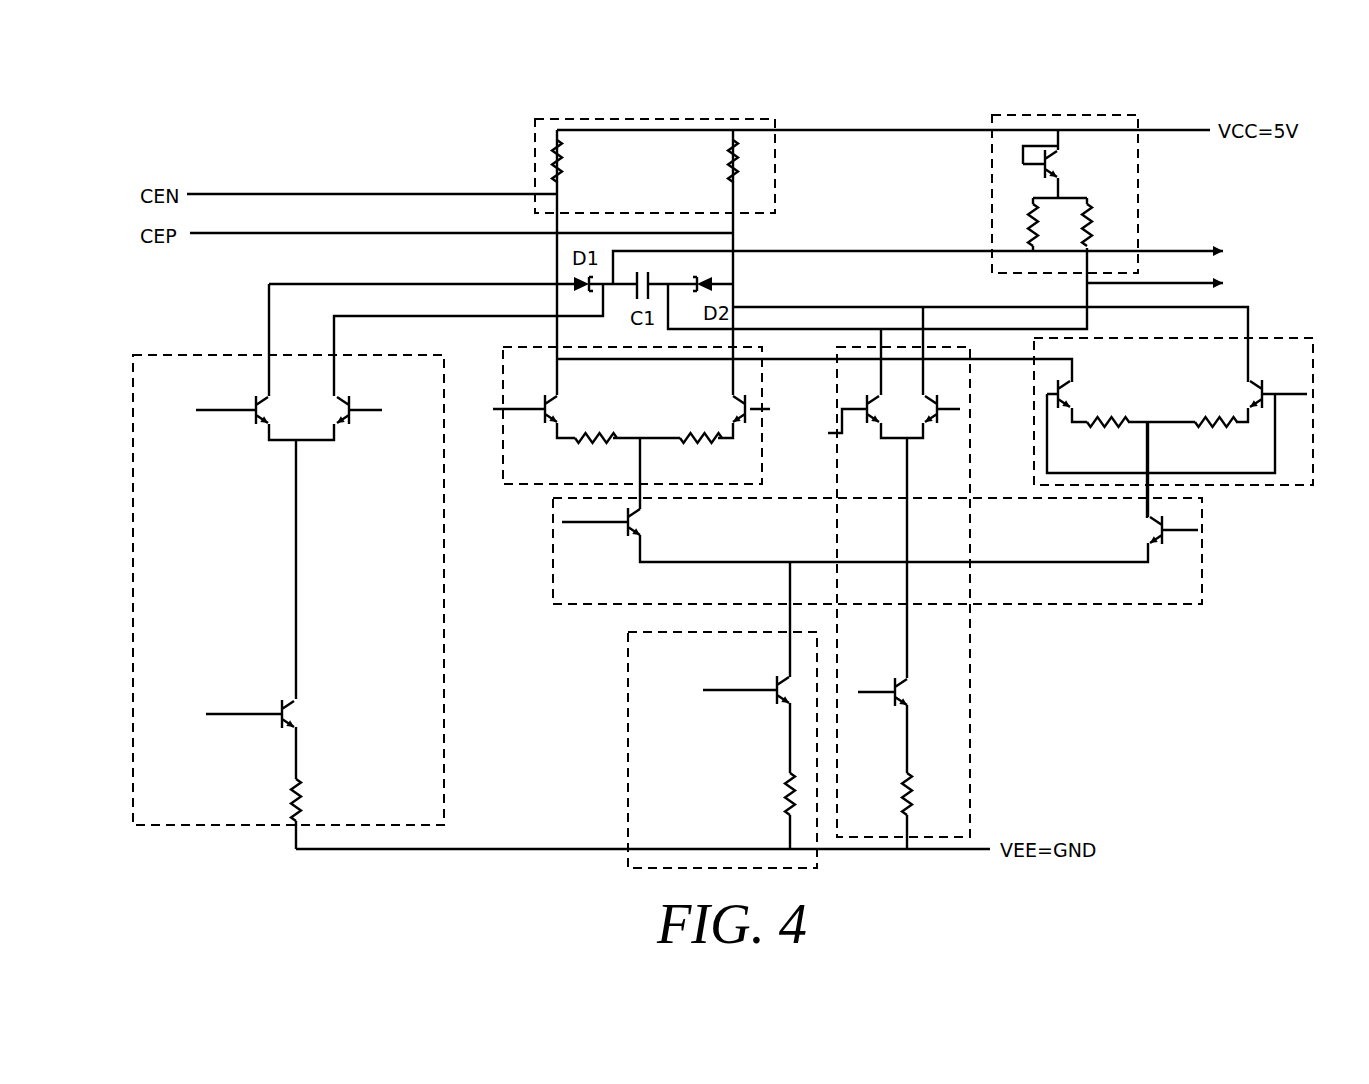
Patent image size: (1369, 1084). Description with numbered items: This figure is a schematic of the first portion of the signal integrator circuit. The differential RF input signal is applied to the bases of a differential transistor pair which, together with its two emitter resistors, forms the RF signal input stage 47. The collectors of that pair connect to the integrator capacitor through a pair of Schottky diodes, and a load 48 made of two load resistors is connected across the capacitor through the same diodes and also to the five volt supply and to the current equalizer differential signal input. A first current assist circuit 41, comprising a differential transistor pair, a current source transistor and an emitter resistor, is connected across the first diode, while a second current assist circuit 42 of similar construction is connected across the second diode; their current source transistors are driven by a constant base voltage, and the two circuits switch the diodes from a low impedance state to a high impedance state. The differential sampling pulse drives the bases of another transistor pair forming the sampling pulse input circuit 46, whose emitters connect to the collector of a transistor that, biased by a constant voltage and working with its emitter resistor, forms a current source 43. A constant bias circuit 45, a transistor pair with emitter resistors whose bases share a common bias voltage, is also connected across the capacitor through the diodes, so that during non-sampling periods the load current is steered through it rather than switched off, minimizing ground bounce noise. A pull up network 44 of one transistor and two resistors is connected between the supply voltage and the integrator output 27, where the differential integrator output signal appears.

The integrator output 27 is at (1305, 235).
The first current assist circuit 41 is at (133, 535).
The second current assist circuit 42 is at (972, 657).
The current source 43 is at (628, 693).
The pull up network 44 is at (1140, 197).
The constant bias circuit 45 is at (1313, 465).
The sampling pulse input circuit 46 is at (1135, 606).
The RF signal input stage 47 is at (503, 460).
The load 48 is at (777, 184).